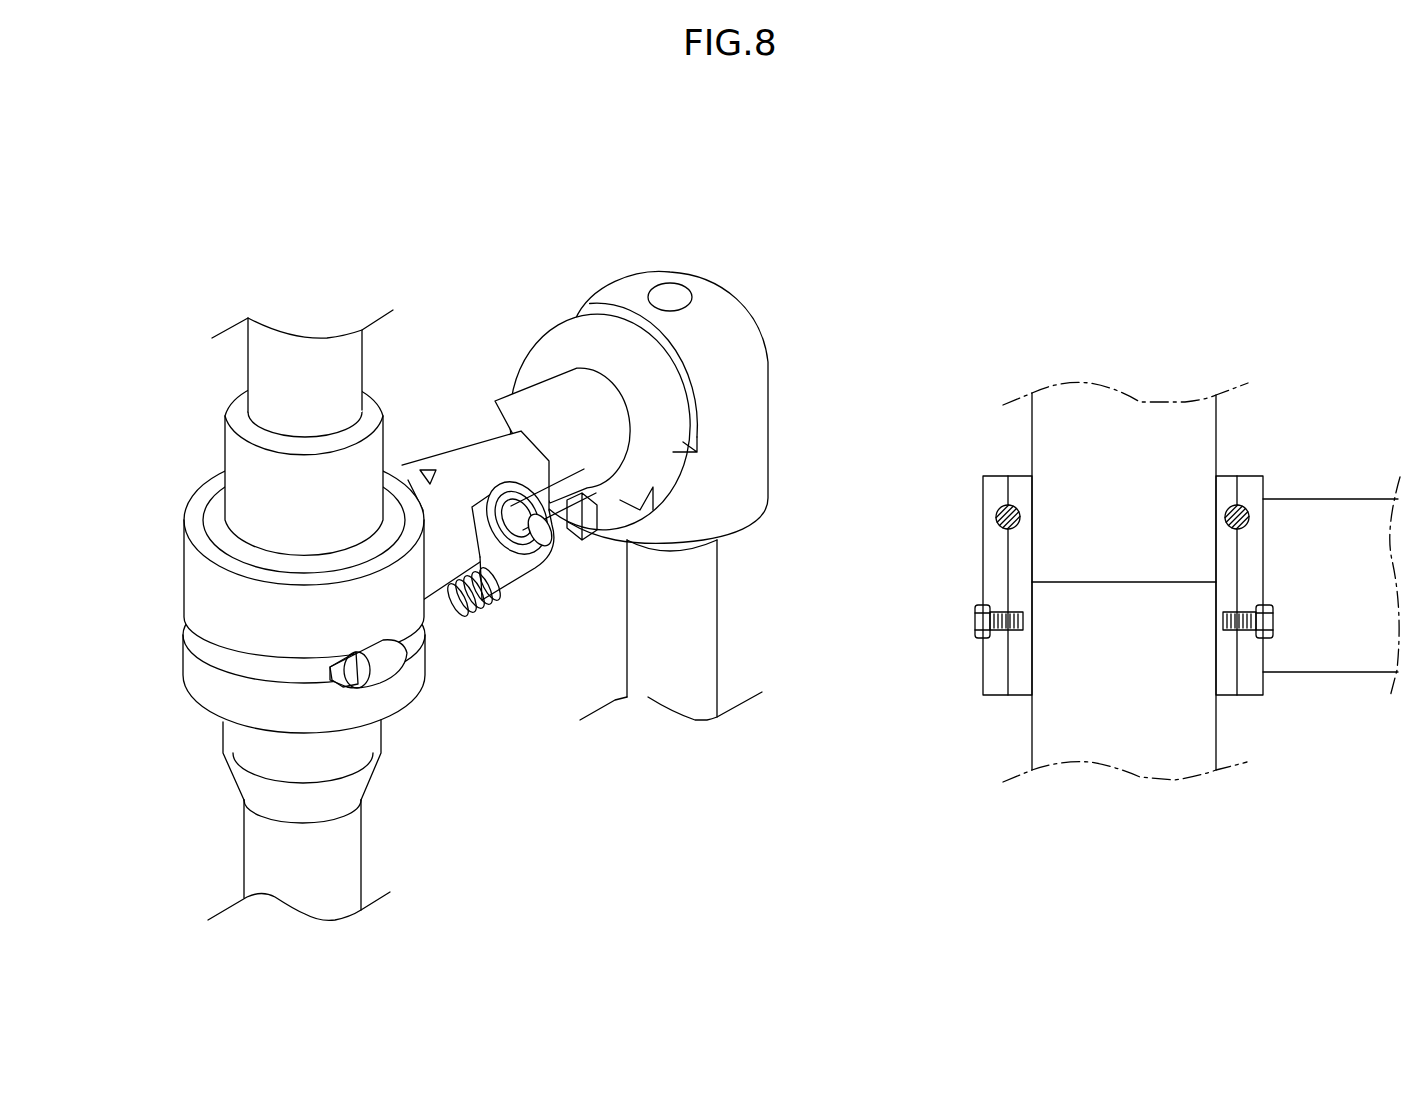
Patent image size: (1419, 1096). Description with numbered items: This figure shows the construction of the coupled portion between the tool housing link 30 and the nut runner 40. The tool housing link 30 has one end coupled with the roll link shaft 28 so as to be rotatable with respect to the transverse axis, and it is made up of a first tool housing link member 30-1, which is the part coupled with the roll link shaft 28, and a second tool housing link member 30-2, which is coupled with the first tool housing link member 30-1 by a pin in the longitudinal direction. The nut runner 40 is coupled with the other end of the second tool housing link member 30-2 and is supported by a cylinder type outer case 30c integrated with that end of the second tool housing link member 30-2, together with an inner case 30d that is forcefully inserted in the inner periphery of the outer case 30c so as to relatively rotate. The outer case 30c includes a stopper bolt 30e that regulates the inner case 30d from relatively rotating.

The roll link shaft 28 is at (698, 645).
The tool housing link 30 is at (513, 282).
The first tool housing link member 30-1 is at (505, 417).
The second tool housing link member 30-2 is at (473, 476).
The outer case 30c is at (185, 542).
The inner case 30d is at (214, 520).
The stopper bolt 30e is at (360, 673).
The nut runner 40 is at (225, 465).